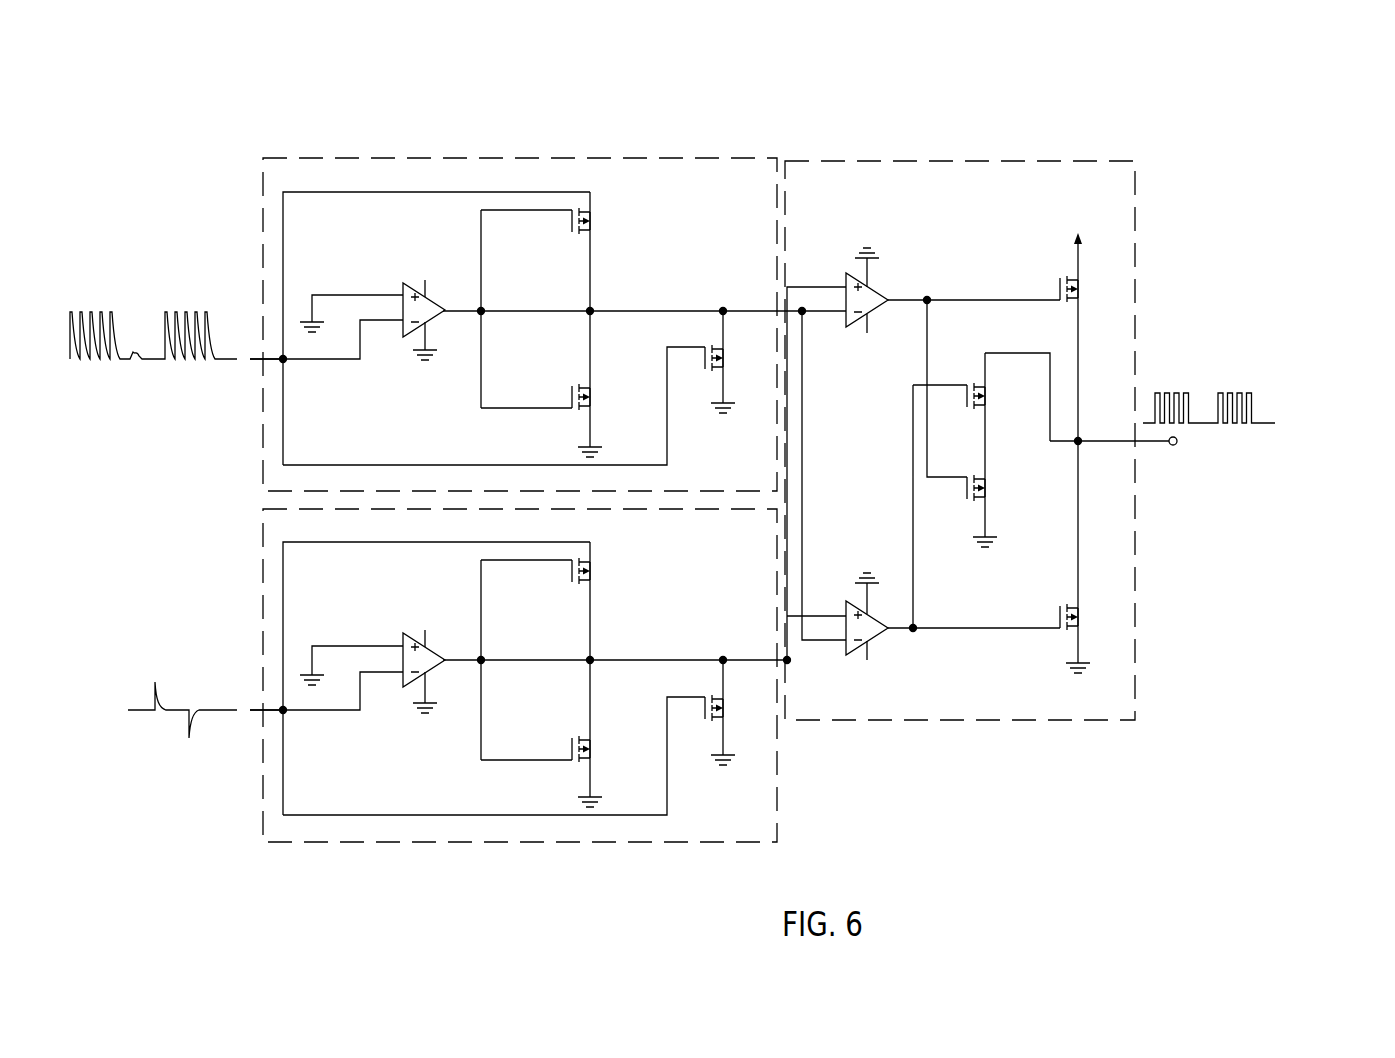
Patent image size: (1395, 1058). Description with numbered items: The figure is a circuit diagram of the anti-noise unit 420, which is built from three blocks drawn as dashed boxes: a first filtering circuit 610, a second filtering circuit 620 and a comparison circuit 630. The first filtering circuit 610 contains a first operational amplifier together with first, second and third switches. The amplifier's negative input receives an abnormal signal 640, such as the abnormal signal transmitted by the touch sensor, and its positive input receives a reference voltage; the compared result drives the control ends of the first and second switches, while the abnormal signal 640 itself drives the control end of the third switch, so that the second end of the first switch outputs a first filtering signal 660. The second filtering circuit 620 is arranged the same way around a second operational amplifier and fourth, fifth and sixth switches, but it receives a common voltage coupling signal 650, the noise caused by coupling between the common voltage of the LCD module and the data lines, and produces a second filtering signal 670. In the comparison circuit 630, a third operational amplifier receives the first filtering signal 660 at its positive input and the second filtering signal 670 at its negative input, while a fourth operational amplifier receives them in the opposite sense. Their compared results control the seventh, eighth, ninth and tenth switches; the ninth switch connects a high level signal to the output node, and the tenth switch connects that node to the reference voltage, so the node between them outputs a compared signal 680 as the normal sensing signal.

The anti-noise unit 420 is at (214, 132).
The first filtering circuit 610 is at (607, 157).
The second filtering circuit 620 is at (717, 843).
The comparison circuit 630 is at (930, 722).
The abnormal signal 640 is at (283, 359).
The common voltage coupling signal 650 is at (283, 710).
The first filtering signal 660 is at (752, 308).
The second filtering signal 670 is at (790, 664).
The compared signal 680 is at (1160, 441).